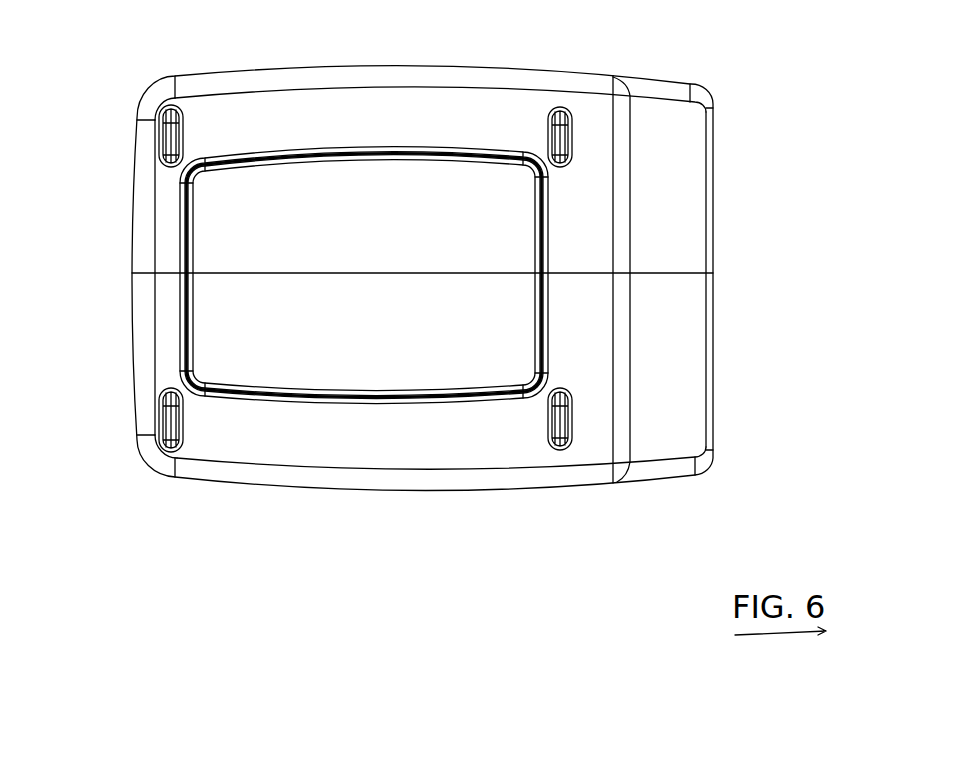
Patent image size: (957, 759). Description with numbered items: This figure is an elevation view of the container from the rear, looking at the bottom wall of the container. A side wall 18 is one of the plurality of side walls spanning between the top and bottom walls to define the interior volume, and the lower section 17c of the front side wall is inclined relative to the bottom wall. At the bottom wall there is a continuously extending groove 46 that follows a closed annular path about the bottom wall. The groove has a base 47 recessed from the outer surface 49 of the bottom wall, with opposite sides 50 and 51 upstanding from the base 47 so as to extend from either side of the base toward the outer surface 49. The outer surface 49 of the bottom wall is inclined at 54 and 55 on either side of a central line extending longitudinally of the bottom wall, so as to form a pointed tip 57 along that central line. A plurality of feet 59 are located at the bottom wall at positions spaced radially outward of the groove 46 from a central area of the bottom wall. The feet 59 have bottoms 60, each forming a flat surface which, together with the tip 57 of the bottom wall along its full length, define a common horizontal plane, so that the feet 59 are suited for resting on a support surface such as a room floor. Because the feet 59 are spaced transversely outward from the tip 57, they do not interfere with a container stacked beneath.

The side wall 18 is at (133, 347).
The inclined portion of the bottom wall outer surface 55 is at (494, 110).
The feet 59 is at (588, 112).
The bottoms of the feet 60 is at (563, 160).
The lower section of the front side wall 17c is at (693, 212).
The tip of the bottom wall 57 is at (593, 275).
The groove 46 is at (279, 381).
The side of the groove 51 is at (432, 397).
The base of the groove 47 is at (405, 405).
The side of the groove 50 is at (378, 405).
The outer surface of the bottom wall 49 is at (507, 468).
The inclined portion of the bottom wall outer surface 54 is at (583, 452).